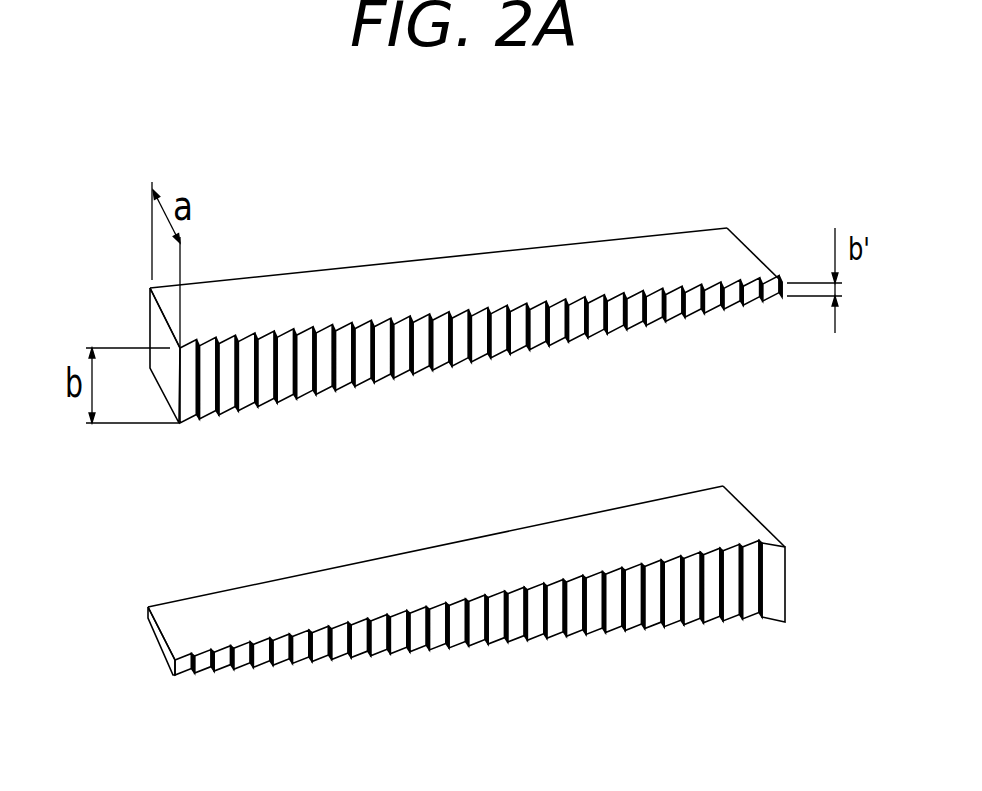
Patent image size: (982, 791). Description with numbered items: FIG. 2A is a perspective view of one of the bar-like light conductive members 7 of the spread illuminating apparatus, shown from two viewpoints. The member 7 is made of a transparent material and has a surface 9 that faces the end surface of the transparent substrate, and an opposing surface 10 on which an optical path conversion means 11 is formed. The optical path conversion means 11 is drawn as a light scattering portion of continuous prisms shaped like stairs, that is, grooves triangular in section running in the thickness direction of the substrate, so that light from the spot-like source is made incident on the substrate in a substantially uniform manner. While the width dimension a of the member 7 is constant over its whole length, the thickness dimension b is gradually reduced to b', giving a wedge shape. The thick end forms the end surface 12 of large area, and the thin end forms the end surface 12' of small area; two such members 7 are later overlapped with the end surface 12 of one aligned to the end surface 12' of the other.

The light conductive member 7 is at (475, 282).
The surface facing the end surface of the transparent substrate 9 is at (318, 270).
The surface opposing surface 9 10 is at (400, 370).
The optical path conversion means 11 is at (562, 343).
The end surface (large end) 12 is at (459, 434).
The end surface (small end) 12' is at (442, 407).